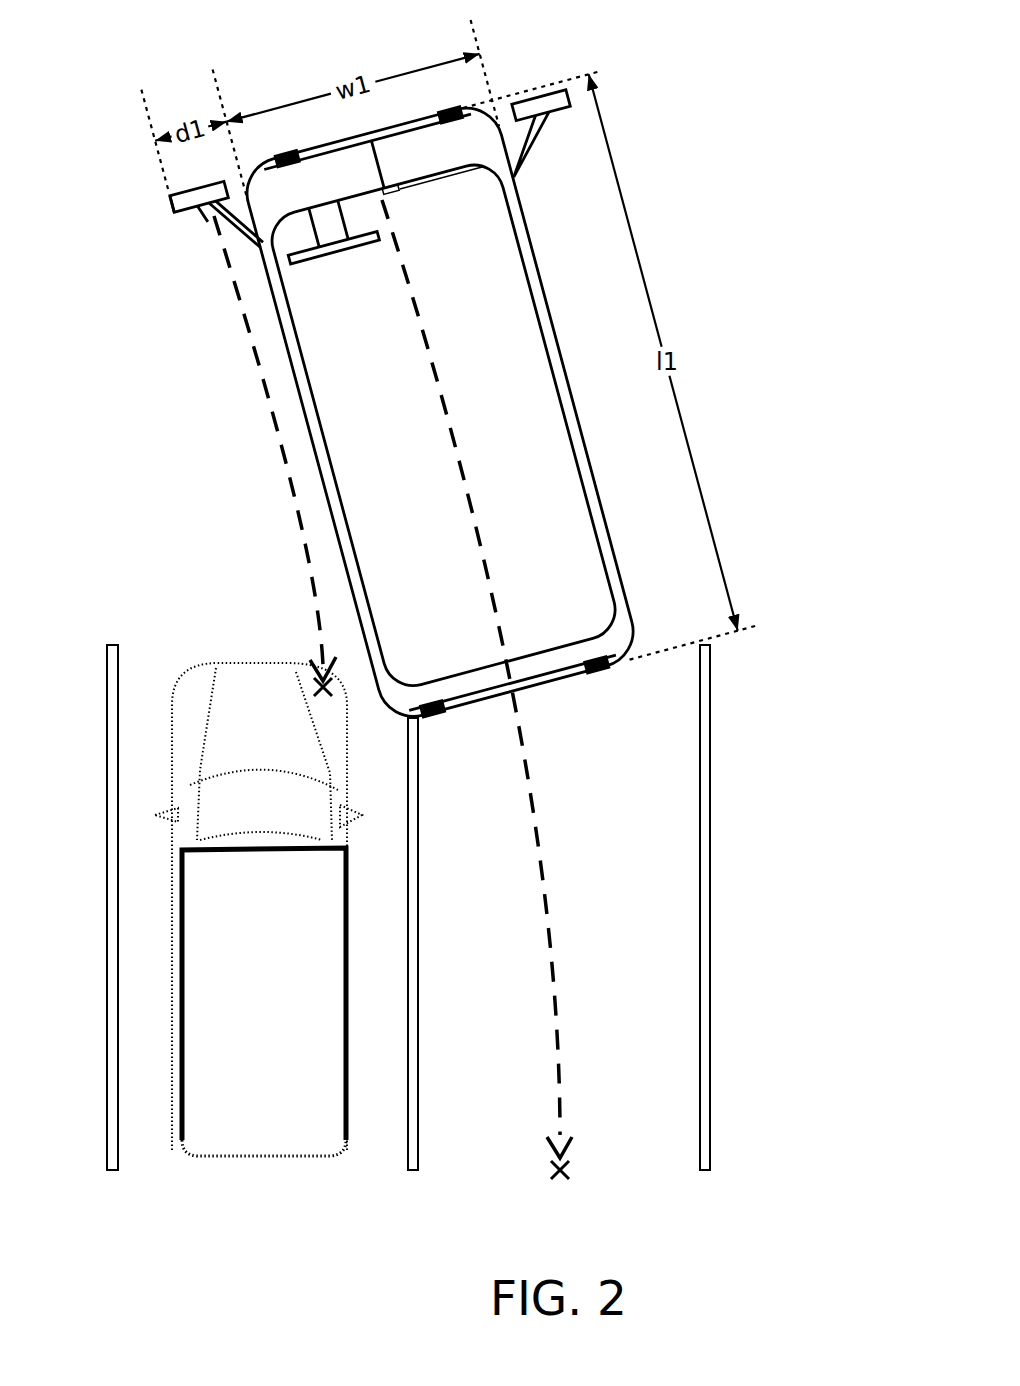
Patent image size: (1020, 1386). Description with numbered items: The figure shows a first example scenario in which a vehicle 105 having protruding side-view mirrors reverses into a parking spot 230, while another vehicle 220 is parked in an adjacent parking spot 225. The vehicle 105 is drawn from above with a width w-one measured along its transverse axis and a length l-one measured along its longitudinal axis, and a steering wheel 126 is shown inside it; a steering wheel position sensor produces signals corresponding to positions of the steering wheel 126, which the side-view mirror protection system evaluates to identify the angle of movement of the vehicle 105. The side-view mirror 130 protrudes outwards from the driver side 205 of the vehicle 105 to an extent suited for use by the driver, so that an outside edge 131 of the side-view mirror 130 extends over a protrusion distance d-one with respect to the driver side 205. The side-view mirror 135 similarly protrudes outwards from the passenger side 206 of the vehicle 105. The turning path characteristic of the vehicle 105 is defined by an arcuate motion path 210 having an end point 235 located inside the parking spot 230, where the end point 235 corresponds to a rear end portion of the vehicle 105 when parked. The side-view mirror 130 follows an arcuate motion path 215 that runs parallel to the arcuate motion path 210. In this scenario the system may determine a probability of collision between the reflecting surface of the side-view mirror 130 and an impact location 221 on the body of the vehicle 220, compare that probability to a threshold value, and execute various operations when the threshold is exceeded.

The vehicle 105 is at (434, 394).
The steering wheel 126 is at (320, 262).
The side-view mirror 130 is at (189, 207).
The outside edge 131 is at (171, 201).
The side-view mirror 135 is at (546, 117).
The driver side 205 is at (273, 300).
The passenger side 206 is at (533, 231).
The arcuate motion path 210 is at (457, 438).
The arcuate motion path 215 is at (283, 477).
The vehicle 220 is at (182, 643).
The impact location 221 is at (307, 672).
The parking spot 225 is at (165, 1172).
The parking spot 230 is at (480, 1168).
The end point 235 is at (578, 1155).